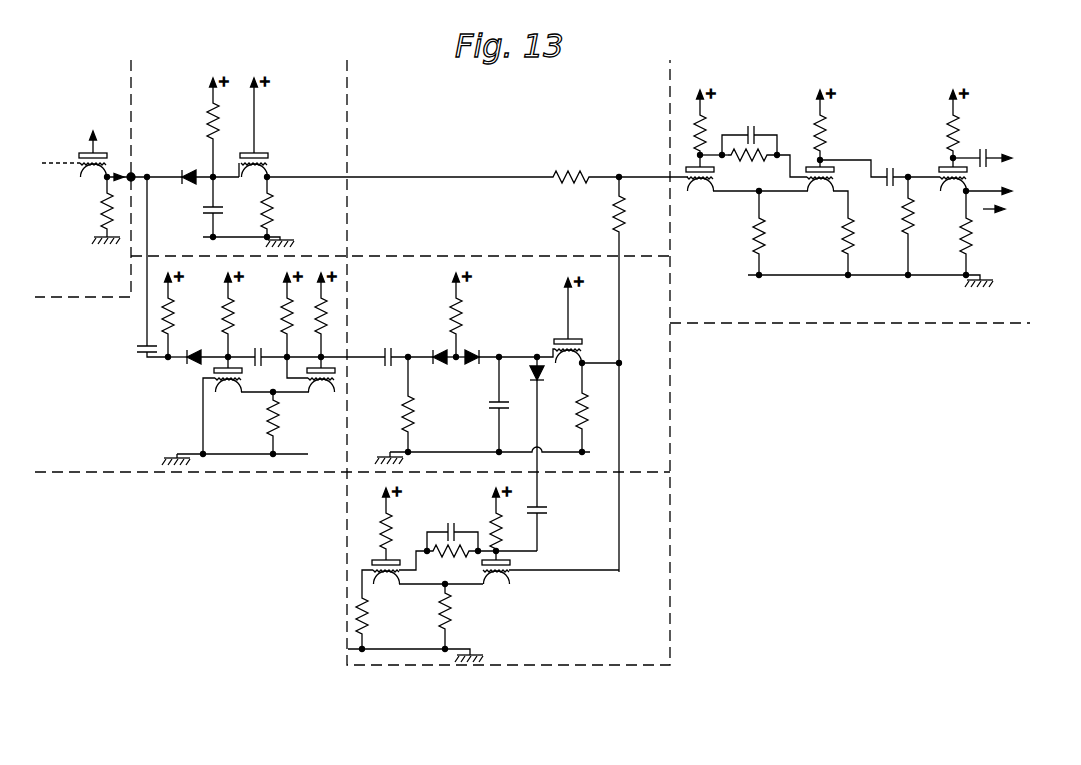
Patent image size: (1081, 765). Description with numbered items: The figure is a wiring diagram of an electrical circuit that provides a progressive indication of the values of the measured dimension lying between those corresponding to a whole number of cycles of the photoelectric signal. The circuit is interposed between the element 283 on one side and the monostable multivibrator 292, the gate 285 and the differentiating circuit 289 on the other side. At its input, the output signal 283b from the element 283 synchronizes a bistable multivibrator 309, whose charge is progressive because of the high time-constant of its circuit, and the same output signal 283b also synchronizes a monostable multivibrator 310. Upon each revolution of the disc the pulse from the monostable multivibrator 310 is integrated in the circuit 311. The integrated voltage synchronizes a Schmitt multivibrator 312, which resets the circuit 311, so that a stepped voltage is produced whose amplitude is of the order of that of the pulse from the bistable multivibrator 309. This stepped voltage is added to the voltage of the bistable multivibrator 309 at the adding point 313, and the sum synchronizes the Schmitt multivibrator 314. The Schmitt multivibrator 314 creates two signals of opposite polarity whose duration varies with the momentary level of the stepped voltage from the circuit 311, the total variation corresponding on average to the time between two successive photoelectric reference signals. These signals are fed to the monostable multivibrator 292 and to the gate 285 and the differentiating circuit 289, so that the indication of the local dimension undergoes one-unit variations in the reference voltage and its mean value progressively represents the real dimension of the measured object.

The element 283 is at (90, 185).
The output signal 283b is at (147, 175).
The bistable multivibrator 309 is at (226, 160).
The monostable multivibrator 310 is at (135, 268).
The integrating circuit 311 is at (392, 366).
The Schmitt multivibrator 312 is at (483, 554).
The adding circuit 313 is at (478, 346).
The Schmitt multivibrator 314 is at (839, 186).
The monostable multivibrator 292 is at (997, 147).
The gate 285 is at (1008, 192).
The differentiating circuit 289 is at (1016, 212).